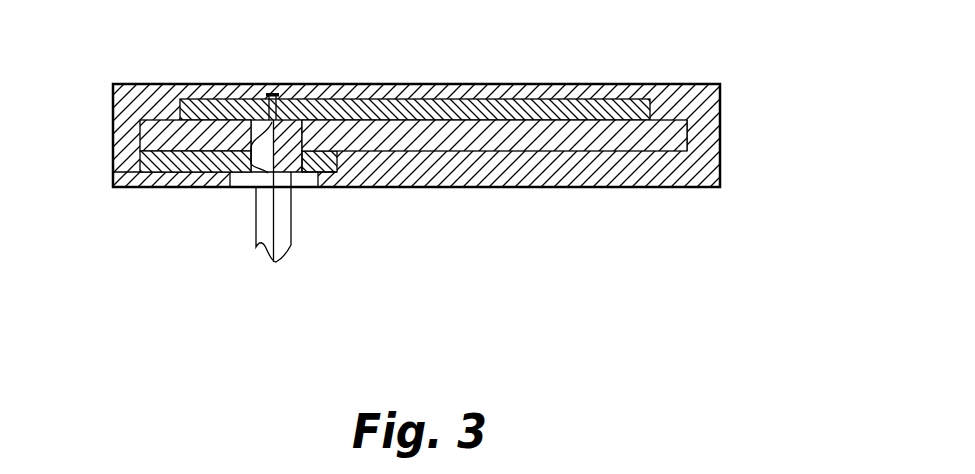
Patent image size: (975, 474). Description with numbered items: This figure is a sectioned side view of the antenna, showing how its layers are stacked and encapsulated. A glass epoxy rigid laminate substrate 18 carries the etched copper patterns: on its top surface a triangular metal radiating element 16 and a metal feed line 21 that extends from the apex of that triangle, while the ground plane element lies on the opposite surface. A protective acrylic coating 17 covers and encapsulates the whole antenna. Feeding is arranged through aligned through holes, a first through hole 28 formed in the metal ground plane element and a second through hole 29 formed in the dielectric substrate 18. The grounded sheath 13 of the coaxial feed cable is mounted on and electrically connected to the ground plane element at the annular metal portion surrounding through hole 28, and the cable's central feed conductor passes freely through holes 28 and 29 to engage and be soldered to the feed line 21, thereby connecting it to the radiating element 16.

The grounded sheath 13 is at (163, 175).
The radiating element 16 is at (480, 106).
The protective acrylic coating 17 is at (713, 157).
The substrate 18 is at (680, 128).
The feed line 21 is at (205, 103).
The first through hole 28 is at (268, 173).
The second through hole 29 is at (270, 96).